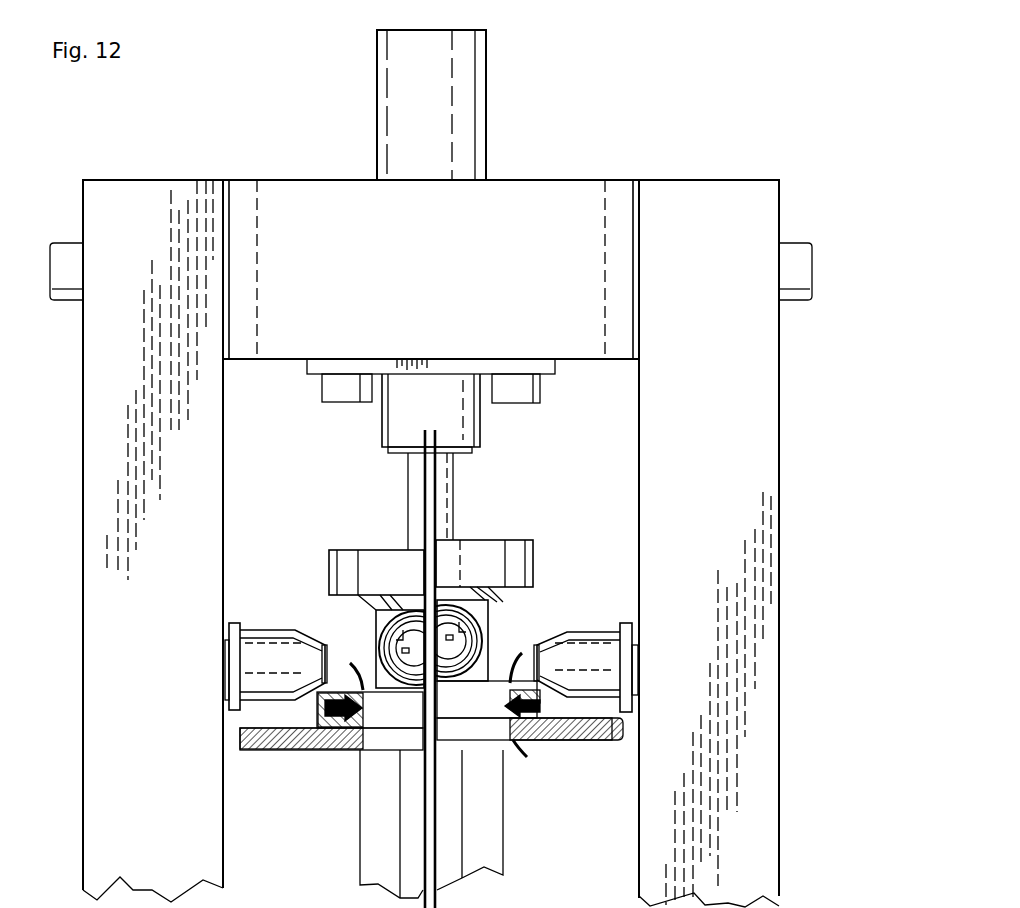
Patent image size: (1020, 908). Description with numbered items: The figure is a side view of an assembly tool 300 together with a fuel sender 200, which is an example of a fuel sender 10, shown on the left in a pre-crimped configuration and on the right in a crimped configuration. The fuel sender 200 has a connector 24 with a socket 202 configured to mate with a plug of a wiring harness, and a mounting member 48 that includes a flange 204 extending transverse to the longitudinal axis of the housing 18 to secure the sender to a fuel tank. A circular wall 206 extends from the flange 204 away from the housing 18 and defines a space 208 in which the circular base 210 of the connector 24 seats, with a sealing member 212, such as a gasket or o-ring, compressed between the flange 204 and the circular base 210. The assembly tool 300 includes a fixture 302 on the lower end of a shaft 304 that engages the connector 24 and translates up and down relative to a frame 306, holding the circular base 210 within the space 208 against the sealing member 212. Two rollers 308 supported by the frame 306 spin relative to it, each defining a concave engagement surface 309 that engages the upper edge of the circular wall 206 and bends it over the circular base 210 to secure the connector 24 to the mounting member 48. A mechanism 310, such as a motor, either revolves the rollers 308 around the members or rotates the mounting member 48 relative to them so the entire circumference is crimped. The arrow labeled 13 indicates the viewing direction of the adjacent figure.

The assembly tool 300 is at (734, 63).
The mechanism 310 is at (641, 78).
The shaft 304 is at (487, 98).
The frame 306 is at (83, 386).
The fuel sender 10 is at (562, 481).
The fuel sender 200 is at (515, 521).
The fixture 302 is at (383, 549).
The socket 202 is at (480, 609).
The connector 24 is at (490, 645).
The roller 308 is at (261, 626).
The concave engagement surface 309 is at (324, 643).
The space 208 is at (335, 690).
The circular wall 206 is at (316, 705).
The flange 204 is at (272, 750).
The sealing member 212 is at (338, 749).
The circular base 210 is at (512, 690).
The mounting member 48 is at (578, 717).
The housing 18 is at (503, 820).
The view direction arrow 13 is at (363, 660).